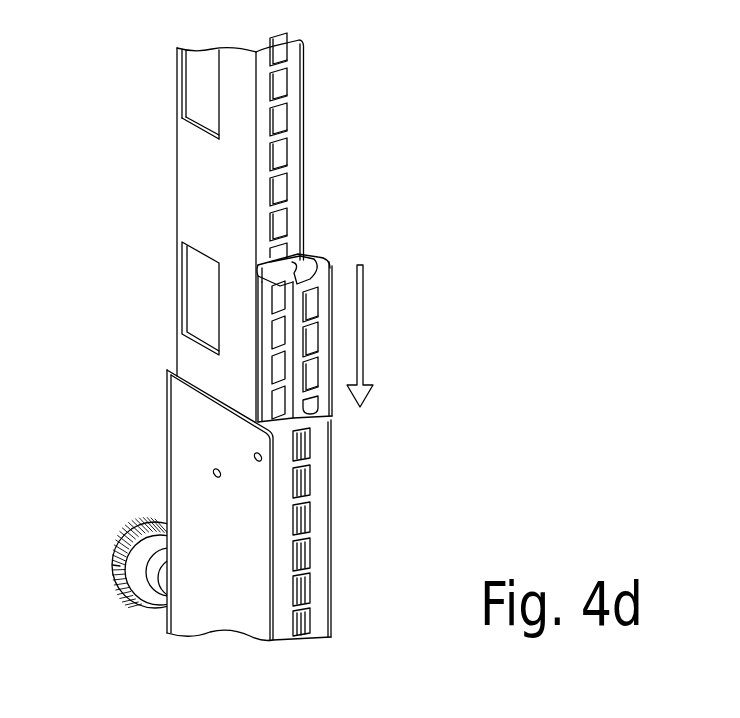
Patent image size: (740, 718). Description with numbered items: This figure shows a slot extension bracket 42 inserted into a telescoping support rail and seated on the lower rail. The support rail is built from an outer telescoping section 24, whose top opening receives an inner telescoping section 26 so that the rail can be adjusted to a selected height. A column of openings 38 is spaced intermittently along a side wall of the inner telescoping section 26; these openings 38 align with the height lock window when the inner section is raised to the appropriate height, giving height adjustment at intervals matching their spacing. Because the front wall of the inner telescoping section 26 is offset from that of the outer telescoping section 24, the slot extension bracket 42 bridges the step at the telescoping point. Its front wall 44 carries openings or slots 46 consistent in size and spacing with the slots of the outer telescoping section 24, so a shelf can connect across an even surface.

The first outer telescoping section 24 is at (213, 508).
The second inner telescoping section 26 is at (193, 185).
The openings 38 is at (197, 293).
The slot extension bracket 42 is at (322, 263).
The front wall 44 is at (326, 380).
The openings or slots 46 is at (308, 340).